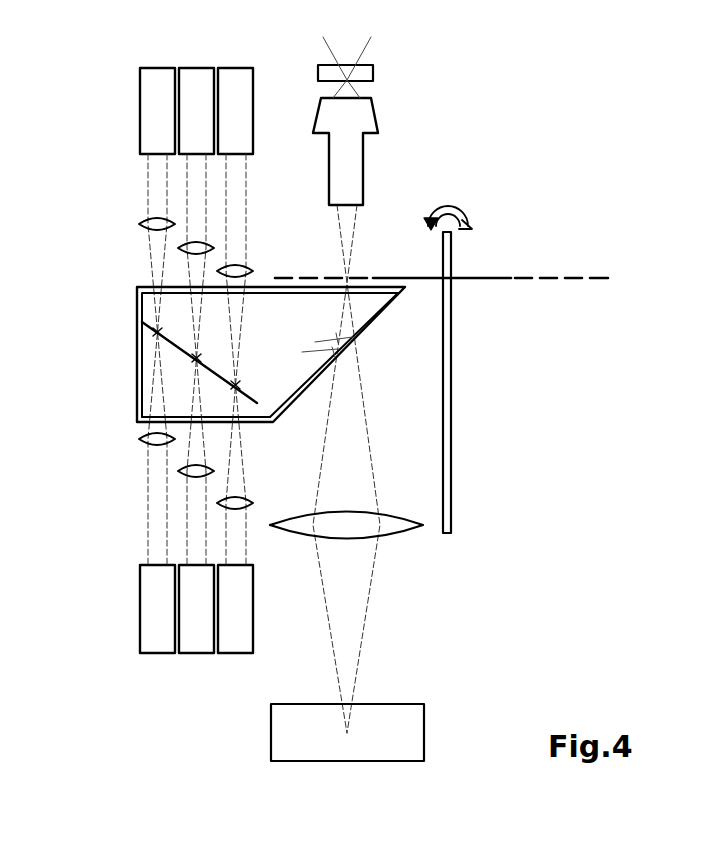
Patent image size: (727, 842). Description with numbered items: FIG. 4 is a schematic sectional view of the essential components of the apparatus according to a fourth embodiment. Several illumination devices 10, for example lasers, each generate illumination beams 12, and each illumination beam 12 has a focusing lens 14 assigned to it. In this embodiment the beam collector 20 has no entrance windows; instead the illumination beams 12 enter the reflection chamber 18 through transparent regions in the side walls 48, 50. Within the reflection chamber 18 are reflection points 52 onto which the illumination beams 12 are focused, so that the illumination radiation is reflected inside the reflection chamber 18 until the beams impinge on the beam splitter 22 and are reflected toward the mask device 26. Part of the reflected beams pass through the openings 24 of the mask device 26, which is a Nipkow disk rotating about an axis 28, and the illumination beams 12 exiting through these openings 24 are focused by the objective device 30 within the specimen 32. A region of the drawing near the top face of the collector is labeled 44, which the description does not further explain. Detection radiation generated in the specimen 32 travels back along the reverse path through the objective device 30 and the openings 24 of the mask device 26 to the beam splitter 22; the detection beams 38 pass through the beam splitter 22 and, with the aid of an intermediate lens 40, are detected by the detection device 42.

The illumination device 10 is at (235, 85).
The illumination beams 12 is at (160, 190).
The focusing lens 14 is at (182, 250).
The reflection chamber 18 is at (283, 370).
The beam collector 20 is at (118, 302).
The beam splitter 22 is at (375, 320).
The openings 24 is at (320, 277).
The mask device 26 is at (478, 277).
The axis 28 is at (447, 322).
The objective device 30 is at (355, 180).
The specimen 32 is at (368, 72).
The detection beams 38 is at (338, 468).
The intermediate lens 40 is at (392, 527).
The detection device 42 is at (288, 726).
The top face 44 is at (260, 286).
The side wall 48 is at (146, 288).
The side wall 50 is at (247, 423).
The reflection points 52 is at (257, 403).